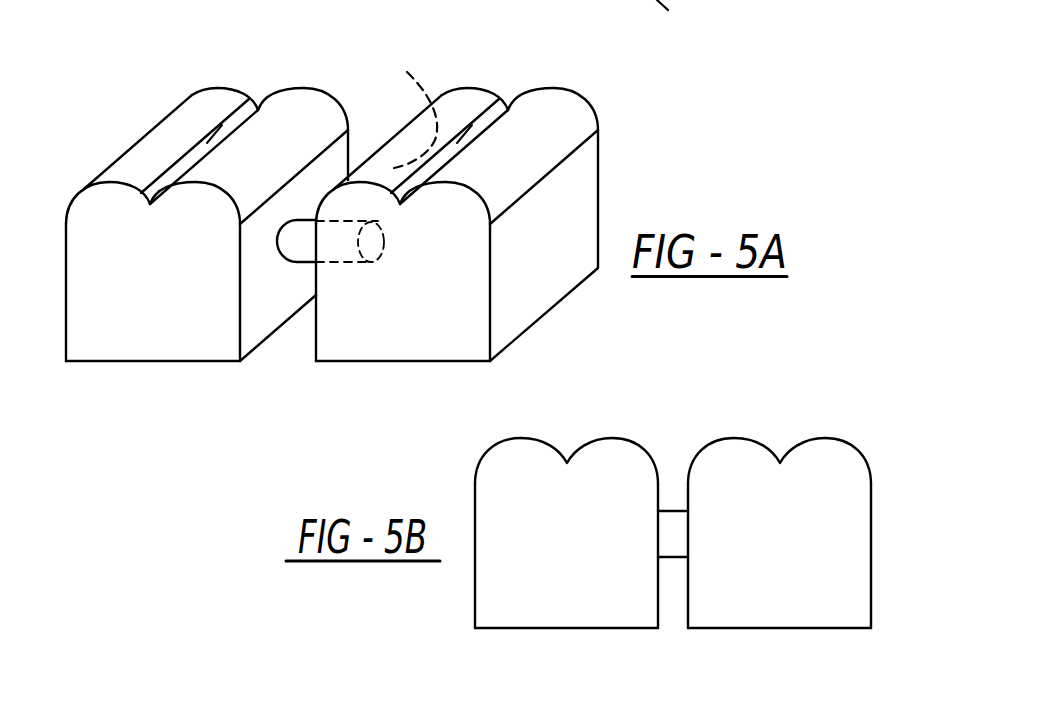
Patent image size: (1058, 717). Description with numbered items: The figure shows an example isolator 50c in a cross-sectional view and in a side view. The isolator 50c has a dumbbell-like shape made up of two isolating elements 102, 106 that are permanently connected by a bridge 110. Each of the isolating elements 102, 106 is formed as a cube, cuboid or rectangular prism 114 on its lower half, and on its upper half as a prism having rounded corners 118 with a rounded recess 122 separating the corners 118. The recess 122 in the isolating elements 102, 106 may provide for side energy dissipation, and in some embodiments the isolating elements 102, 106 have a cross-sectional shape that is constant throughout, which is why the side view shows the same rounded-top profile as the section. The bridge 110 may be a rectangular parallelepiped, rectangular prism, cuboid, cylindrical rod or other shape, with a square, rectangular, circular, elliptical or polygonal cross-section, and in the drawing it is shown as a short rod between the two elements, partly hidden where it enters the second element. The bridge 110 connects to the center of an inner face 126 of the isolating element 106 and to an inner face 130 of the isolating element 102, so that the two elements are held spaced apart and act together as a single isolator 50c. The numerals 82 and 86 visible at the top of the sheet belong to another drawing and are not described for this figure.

In FIG. 5A, the isolator 50c is at (98, 126).
In FIG. 5B, the isolator 50c is at (812, 403).
In FIG. 5A, the rod 82 is at (718, 0).
In FIG. 5A, the connector 86 is at (580, 7).
In FIG. 5A, the isolating element 102 is at (58, 285).
In FIG. 5B, the isolating element 102 is at (455, 594).
In FIG. 5A, the isolating element 106 is at (563, 198).
In FIG. 5B, the isolating element 106 is at (842, 502).
In FIG. 5A, the bridge 110 is at (303, 246).
In FIG. 5B, the bridge 110 is at (667, 522).
In FIG. 5A, the rectangular prism 114 is at (120, 348).
In FIG. 5B, the rectangular prism 114 is at (588, 602).
In FIG. 5A, the rounded corners 118 is at (222, 87).
In FIG. 5B, the rounded corners 118 is at (522, 436).
In FIG. 5A, the rounded recess 122 is at (258, 108).
In FIG. 5B, the rounded recess 122 is at (567, 462).
In FIG. 5A, the inner face 126 is at (407, 105).
In FIG. 5A, the inner face 130 is at (258, 334).